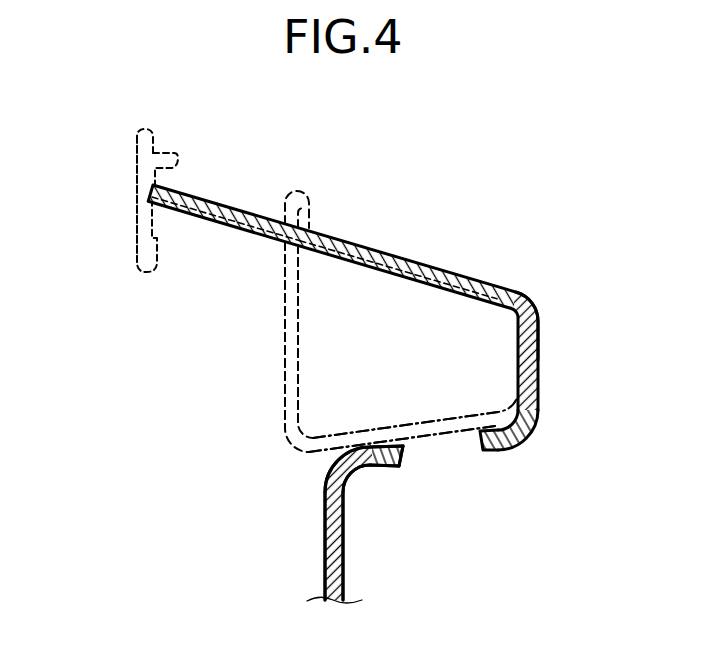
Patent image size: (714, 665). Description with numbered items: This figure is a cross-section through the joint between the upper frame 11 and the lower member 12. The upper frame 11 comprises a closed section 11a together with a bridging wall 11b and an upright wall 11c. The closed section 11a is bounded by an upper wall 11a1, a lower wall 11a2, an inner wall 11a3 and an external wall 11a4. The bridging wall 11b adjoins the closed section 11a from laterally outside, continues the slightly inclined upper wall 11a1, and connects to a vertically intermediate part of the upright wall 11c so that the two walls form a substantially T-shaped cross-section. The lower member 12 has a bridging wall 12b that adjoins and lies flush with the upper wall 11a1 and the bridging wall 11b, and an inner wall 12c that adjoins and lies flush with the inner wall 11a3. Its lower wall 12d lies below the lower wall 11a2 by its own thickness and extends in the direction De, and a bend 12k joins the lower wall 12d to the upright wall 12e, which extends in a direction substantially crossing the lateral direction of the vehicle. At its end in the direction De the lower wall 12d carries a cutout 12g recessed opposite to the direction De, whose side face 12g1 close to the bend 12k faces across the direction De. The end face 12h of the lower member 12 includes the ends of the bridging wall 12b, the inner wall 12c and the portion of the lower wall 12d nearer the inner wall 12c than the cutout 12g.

The upper frame 11 is at (134, 129).
The closed section 11a is at (279, 324).
The upper wall 11a1 is at (437, 266).
The lower wall 11a2 is at (430, 424).
The inner wall 11a3 is at (540, 347).
The external wall 11a4 is at (283, 369).
The bridging wall 11b is at (237, 209).
The upright wall 11c is at (136, 226).
The lower member 12 is at (318, 572).
The bridging wall 12b is at (350, 243).
The inner wall 12c is at (530, 363).
The lower wall 12d is at (380, 461).
The upright wall 12e is at (332, 544).
The cutout 12g is at (477, 450).
The side face 12g1 is at (402, 452).
The end face 12h is at (518, 437).
The bend 12k is at (332, 474).